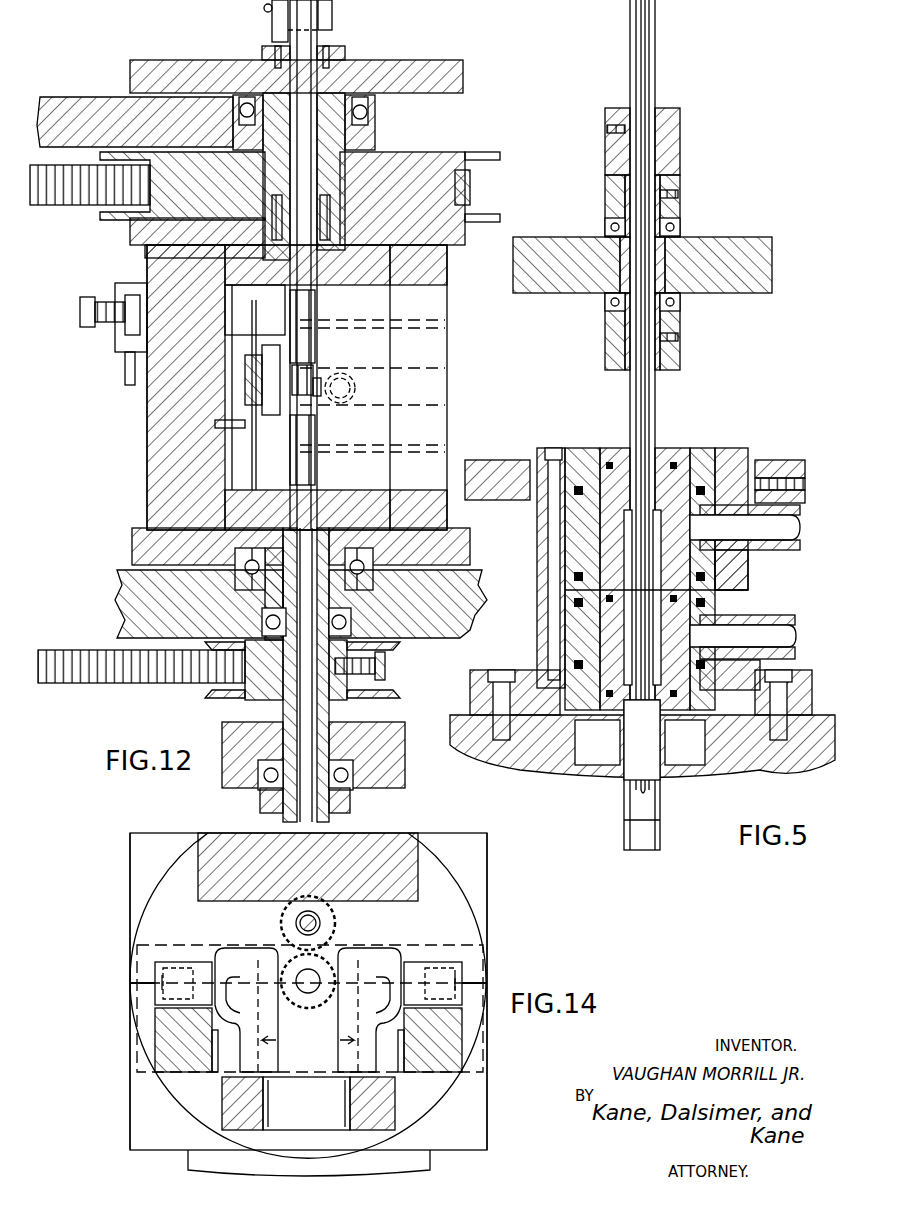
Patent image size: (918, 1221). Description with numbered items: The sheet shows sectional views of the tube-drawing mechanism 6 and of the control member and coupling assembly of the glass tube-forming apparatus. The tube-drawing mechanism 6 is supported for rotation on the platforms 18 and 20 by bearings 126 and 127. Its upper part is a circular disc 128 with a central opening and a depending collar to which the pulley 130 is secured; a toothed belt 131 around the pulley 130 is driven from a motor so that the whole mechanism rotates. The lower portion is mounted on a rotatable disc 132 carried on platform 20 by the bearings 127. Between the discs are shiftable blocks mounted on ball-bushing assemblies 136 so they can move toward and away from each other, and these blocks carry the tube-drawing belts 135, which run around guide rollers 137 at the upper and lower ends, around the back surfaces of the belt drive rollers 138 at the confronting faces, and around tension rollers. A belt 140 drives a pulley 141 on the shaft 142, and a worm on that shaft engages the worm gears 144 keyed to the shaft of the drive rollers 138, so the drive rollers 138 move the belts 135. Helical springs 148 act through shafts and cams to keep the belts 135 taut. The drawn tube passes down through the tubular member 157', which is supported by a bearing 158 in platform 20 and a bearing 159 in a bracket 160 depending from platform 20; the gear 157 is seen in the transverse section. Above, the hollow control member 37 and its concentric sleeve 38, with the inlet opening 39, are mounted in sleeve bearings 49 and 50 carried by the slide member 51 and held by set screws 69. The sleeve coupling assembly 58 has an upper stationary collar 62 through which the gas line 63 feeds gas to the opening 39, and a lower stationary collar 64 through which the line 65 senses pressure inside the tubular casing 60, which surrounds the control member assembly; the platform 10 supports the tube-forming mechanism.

In FIG. 12, the tube-drawing mechanism 6 is at (461, 358).
In FIG. 14, the tube-drawing mechanism 6 is at (148, 1101).
In FIG. 5, the platform 10 is at (790, 770).
In FIG. 12, the platform 18 is at (66, 95).
In FIG. 12, the platform 20 is at (120, 605).
In FIG. 14, the platform 20 is at (488, 1088).
In FIG. 5, the control member 37 is at (630, 792).
In FIG. 5, the sleeve 38 is at (656, 52).
In FIG. 5, the inlet opening 39 is at (620, 515).
In FIG. 5, the sleeve bearing 49 is at (605, 190).
In FIG. 5, the sleeve bearing 50 is at (605, 340).
In FIG. 5, the slide member 51 is at (755, 237).
In FIG. 5, the sleeve coupling assembly 58 is at (760, 590).
In FIG. 5, the tubular casing 60 is at (625, 840).
In FIG. 5, the stationary collar 62 is at (748, 572).
In FIG. 5, the gas line 63 is at (790, 515).
In FIG. 5, the stationary collar 64 is at (770, 620).
In FIG. 5, the line 65 is at (770, 652).
In FIG. 5, the set screws 69 is at (607, 129).
In FIG. 12, the bearing 126 is at (362, 100).
In FIG. 12, the bearing 127 is at (240, 565).
In FIG. 12, the circular disc 128 is at (165, 60).
In FIG. 12, the pulley 130 is at (445, 152).
In FIG. 12, the toothed belt 131 is at (68, 206).
In FIG. 12, the rotatable disc 132 is at (132, 547).
In FIG. 14, the rotatable disc 132 is at (150, 1048).
In FIG. 12, the tube-drawing belts 135 is at (313, 362).
In FIG. 14, the ball-bushing assemblies 136 is at (160, 958).
In FIG. 12, the guide rollers 137 is at (320, 298).
In FIG. 12, the belt drive rollers 138 is at (321, 398).
In FIG. 12, the belt 140 is at (68, 684).
In FIG. 12, the pulley 141 is at (225, 695).
In FIG. 12, the shaft 142 is at (250, 462).
In FIG. 14, the shaft 142 is at (296, 923).
In FIG. 12, the worm gears 144 is at (245, 400).
In FIG. 12, the helical springs 148 is at (100, 322).
In FIG. 14, the gear 157 is at (308, 1010).
In FIG. 12, the tubular member 157' is at (346, 675).
In FIG. 12, the bearing 158 is at (355, 618).
In FIG. 12, the bearing 159 is at (350, 782).
In FIG. 12, the bracket 160 is at (405, 775).